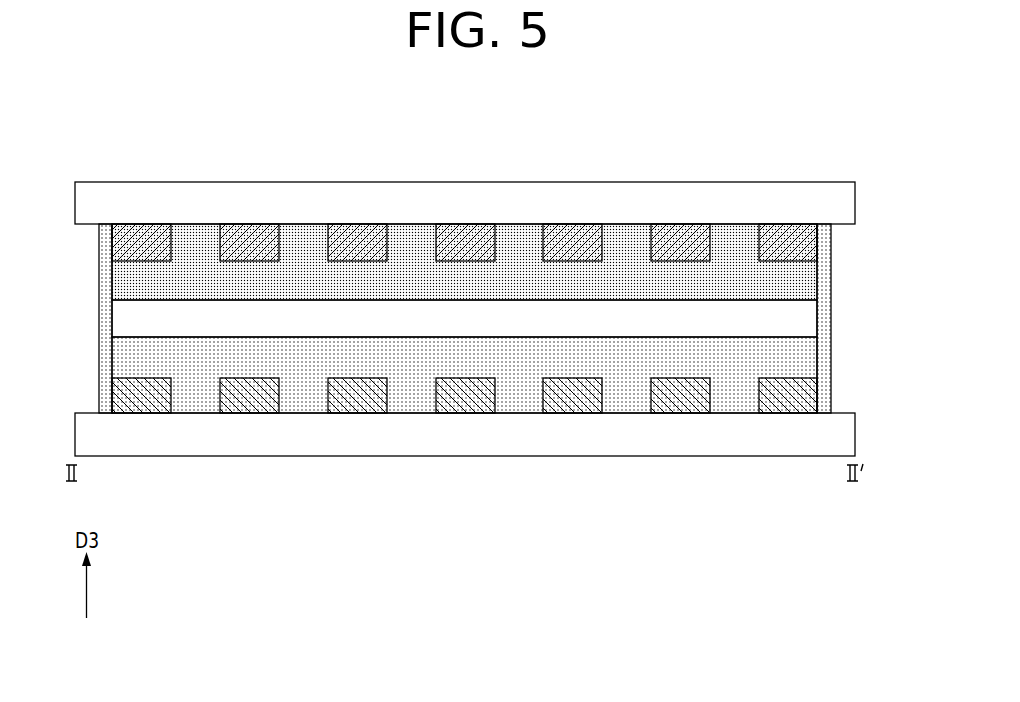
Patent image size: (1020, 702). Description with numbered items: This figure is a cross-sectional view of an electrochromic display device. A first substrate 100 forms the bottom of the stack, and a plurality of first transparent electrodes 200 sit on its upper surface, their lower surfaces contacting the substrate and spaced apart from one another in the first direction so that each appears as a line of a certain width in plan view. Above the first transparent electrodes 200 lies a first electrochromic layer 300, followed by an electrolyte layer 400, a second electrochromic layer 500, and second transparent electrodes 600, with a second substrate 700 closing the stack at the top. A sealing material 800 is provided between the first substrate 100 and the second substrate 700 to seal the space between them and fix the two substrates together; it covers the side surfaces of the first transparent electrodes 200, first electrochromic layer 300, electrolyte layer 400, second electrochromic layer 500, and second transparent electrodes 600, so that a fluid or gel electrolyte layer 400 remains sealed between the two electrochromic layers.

The first substrate 100 is at (843, 433).
The first transparent electrodes 200 is at (805, 393).
The first electrochromic layer 300 is at (808, 355).
The electrolyte layer 400 is at (808, 318).
The second electrochromic layer 500 is at (808, 278).
The second transparent electrodes 600 is at (808, 240).
The second substrate 700 is at (843, 203).
The sealing material 800 is at (100, 317).